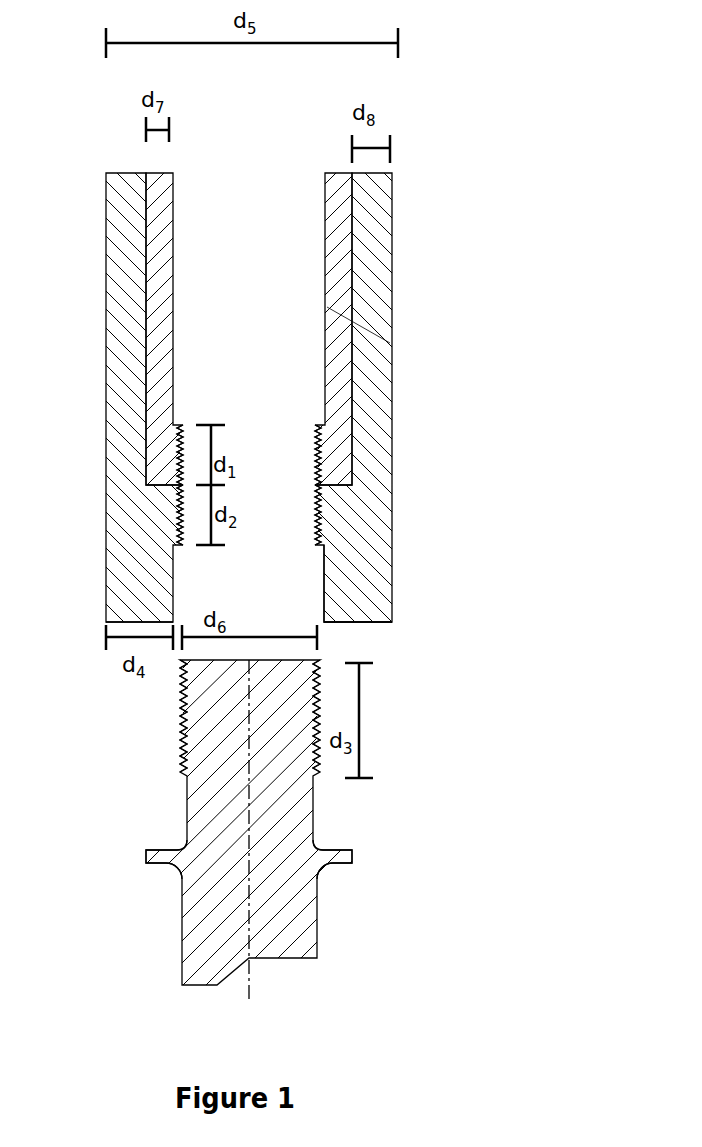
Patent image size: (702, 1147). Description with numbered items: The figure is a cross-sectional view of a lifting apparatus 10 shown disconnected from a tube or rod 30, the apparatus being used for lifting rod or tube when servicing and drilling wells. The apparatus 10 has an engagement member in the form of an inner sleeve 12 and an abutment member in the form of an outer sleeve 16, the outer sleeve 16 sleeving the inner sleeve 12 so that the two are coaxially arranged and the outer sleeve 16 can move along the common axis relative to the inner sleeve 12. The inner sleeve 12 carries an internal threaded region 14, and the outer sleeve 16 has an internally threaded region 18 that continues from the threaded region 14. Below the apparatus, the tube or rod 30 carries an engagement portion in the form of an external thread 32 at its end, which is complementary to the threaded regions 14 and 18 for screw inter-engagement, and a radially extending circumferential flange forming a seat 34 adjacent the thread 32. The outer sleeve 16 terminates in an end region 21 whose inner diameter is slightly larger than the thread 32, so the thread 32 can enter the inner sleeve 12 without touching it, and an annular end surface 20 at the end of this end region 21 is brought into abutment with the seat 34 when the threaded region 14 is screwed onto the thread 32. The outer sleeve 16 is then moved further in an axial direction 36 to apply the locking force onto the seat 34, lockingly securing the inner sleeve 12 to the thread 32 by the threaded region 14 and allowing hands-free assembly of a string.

The apparatus 10 is at (327, 421).
The inner sleeve 12 is at (306, 256).
The threaded region 14 is at (300, 441).
The outer sleeve 16 is at (405, 477).
The threaded region 18 is at (306, 509).
The end surface 20 is at (380, 630).
The end region 21 is at (329, 594).
The tube or rod 30 is at (254, 856).
The external thread 32 is at (161, 733).
The seat 34 is at (339, 845).
The axial direction 36 is at (254, 1010).